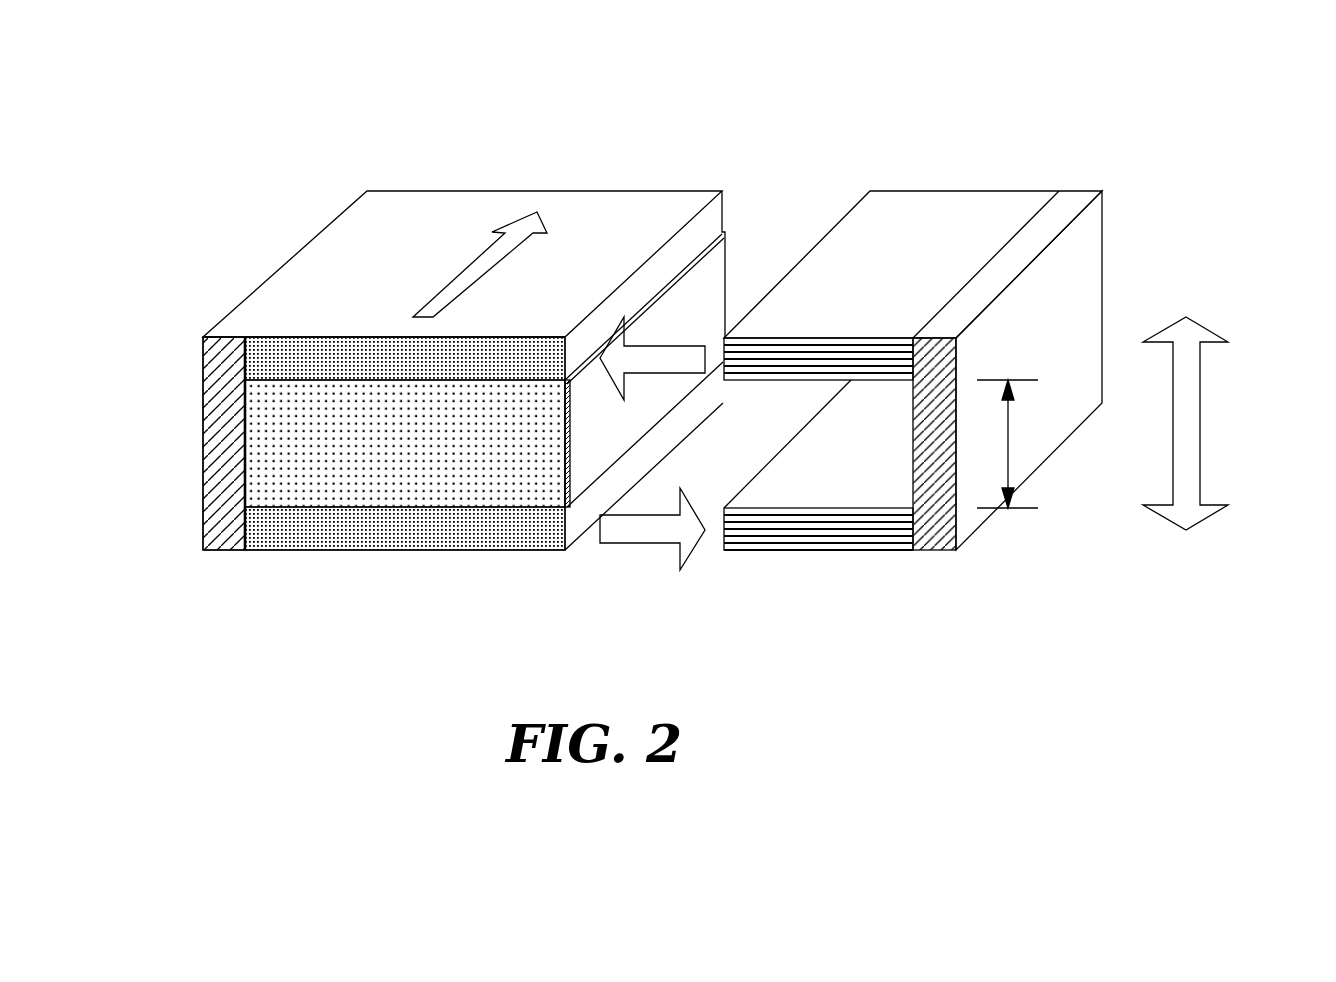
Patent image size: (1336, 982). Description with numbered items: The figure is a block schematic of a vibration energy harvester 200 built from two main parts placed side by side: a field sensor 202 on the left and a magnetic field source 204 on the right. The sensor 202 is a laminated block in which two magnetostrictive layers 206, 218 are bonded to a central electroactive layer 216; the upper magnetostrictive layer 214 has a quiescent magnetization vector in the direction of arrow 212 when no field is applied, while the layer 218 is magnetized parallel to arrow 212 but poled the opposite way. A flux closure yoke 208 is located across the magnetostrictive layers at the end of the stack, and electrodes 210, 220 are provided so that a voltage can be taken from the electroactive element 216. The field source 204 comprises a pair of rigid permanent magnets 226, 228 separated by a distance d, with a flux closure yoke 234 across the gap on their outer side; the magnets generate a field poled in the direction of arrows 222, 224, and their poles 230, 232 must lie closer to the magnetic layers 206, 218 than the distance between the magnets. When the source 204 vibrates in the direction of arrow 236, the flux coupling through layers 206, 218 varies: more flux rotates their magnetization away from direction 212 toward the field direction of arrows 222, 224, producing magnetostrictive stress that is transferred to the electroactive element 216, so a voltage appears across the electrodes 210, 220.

The vibration energy harvester 200 is at (158, 705).
The sensor 202 is at (240, 227).
The magnetic field source 204 is at (1152, 166).
The magnetostrictive layer 206 is at (285, 357).
The flux closure yoke 208 is at (205, 380).
The electrode 210 is at (244, 443).
The arrow 212 is at (517, 232).
The magnetic, magnetostrictive layer 214 is at (643, 210).
The electroactive layer 216 is at (329, 443).
The magnetostrictive layer 218 is at (475, 527).
The electrode 220 is at (705, 277).
The arrow 222 is at (663, 360).
The arrow 224 is at (642, 528).
The permanent magnet 226 is at (935, 210).
The permanent magnet 228 is at (820, 550).
The pole 230 is at (747, 380).
The pole 232 is at (747, 542).
The flux closure yoke 234 is at (1060, 275).
The arrow 236 is at (1188, 423).